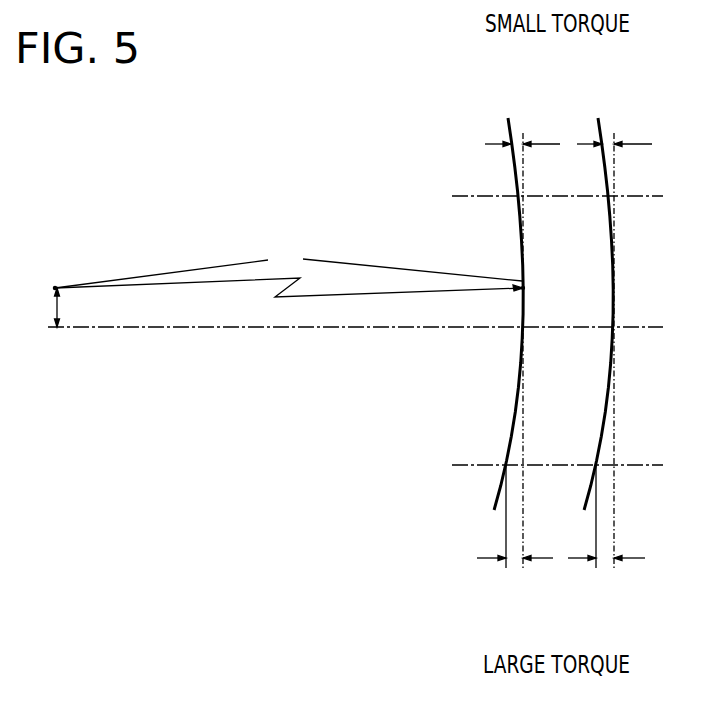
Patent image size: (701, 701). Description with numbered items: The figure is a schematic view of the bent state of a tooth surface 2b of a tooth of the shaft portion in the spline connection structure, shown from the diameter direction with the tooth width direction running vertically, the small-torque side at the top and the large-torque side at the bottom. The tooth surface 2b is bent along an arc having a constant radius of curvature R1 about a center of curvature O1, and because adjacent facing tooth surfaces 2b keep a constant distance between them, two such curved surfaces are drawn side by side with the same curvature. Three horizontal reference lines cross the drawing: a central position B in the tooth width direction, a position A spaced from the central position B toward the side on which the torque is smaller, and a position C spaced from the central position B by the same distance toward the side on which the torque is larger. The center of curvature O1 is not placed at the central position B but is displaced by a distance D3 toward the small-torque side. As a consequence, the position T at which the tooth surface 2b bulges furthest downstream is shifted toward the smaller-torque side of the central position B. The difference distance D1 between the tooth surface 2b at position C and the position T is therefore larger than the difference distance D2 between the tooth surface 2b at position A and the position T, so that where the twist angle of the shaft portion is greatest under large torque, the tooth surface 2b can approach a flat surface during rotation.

The tooth surface 2b is at (516, 125).
The difference distance D1 is at (513, 562).
The difference distance D2 is at (521, 133).
The distance D3 is at (40, 307).
The radius of curvature R1 is at (289, 270).
The center of curvature O1 is at (56, 287).
The position T is at (525, 288).
The position A is at (545, 195).
The central position B is at (355, 329).
The position C is at (545, 465).